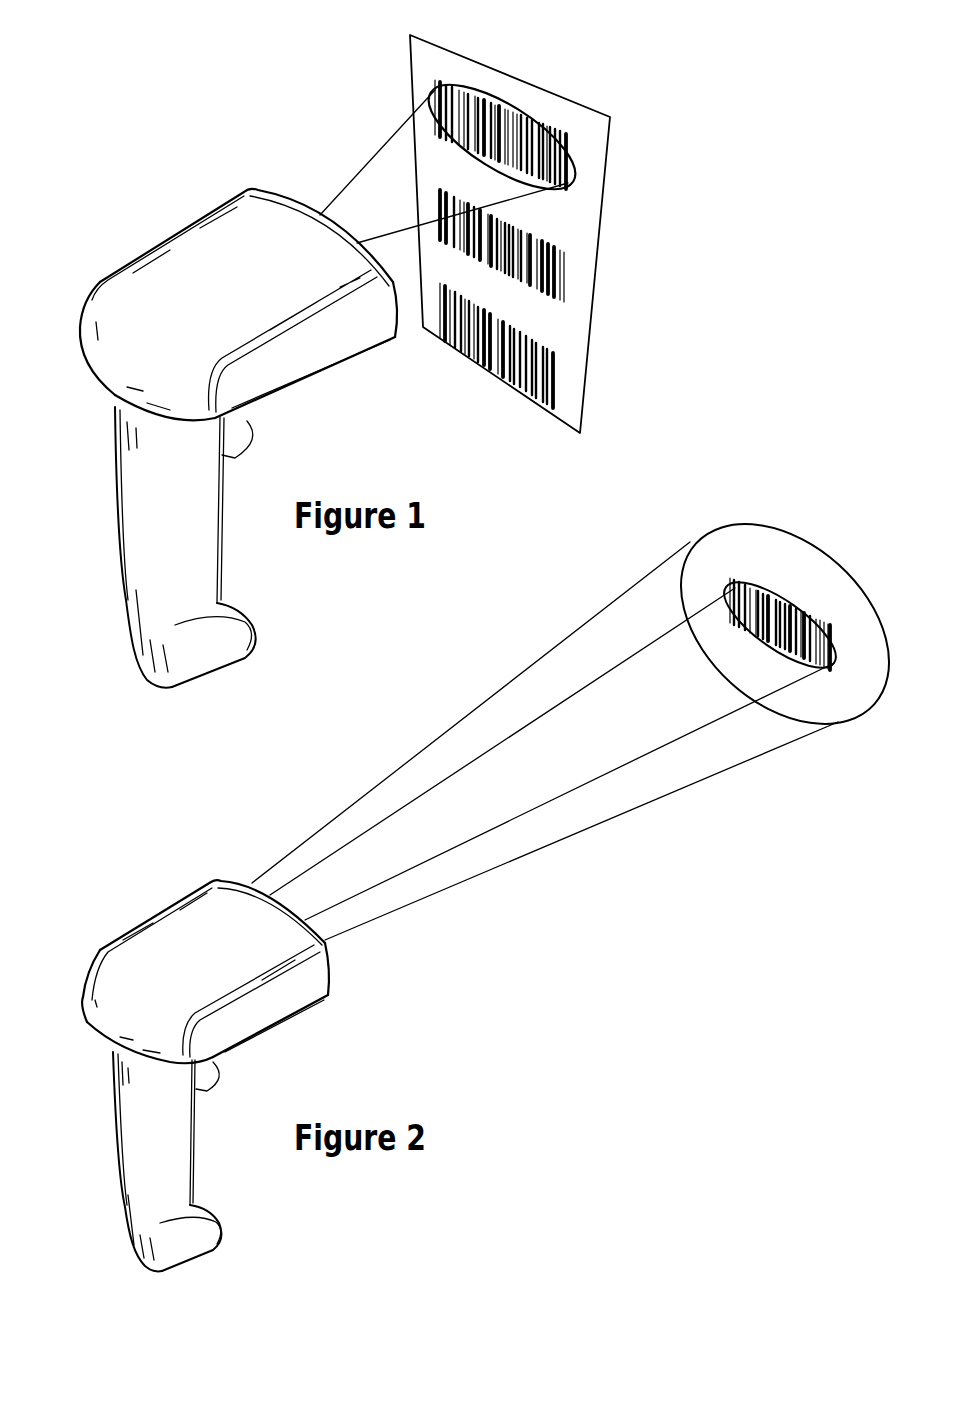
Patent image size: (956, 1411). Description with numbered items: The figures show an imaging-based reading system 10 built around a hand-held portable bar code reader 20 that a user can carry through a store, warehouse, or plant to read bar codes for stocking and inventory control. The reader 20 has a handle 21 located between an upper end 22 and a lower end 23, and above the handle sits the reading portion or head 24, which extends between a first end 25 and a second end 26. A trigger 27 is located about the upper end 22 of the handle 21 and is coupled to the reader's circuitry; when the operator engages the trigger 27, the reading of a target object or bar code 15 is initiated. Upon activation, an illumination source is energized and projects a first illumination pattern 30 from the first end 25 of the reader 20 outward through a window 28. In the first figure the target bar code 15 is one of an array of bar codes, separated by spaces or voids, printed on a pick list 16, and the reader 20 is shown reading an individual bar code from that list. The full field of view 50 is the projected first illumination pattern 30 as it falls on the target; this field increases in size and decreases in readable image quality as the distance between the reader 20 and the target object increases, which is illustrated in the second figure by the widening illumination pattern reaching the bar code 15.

In FIG. 1, the imaging-based reading system 10 is at (312, 354).
In FIG. 2, the imaging-based reading system 10 is at (446, 912).
In FIG. 1, the target bar code 15 is at (582, 190).
In FIG. 2, the target bar code 15 is at (852, 677).
In FIG. 1, the pick list 16 is at (602, 296).
In FIG. 1, the bar code reader 20 is at (226, 188).
In FIG. 2, the bar code reader 20 is at (196, 862).
In FIG. 1, the handle 21 is at (125, 623).
In FIG. 2, the handle 21 is at (116, 1214).
In FIG. 1, the upper end 22 is at (92, 405).
In FIG. 2, the upper end 22 is at (91, 1056).
In FIG. 1, the lower end 23 is at (230, 649).
In FIG. 2, the lower end 23 is at (216, 1240).
In FIG. 1, the head 24 is at (203, 258).
In FIG. 2, the head 24 is at (182, 941).
In FIG. 1, the first end 25 is at (393, 345).
In FIG. 2, the first end 25 is at (328, 1000).
In FIG. 1, the second end 26 is at (80, 335).
In FIG. 2, the second end 26 is at (82, 1000).
In FIG. 1, the trigger 27 is at (245, 440).
In FIG. 2, the trigger 27 is at (200, 1083).
In FIG. 1, the window 28 is at (412, 316).
In FIG. 2, the window 28 is at (345, 947).
In FIG. 1, the first illumination pattern 30 is at (352, 162).
In FIG. 2, the first illumination pattern 30 is at (400, 757).
In FIG. 1, the full field of view 50 is at (552, 112).
In FIG. 2, the full field of view 50 is at (789, 520).